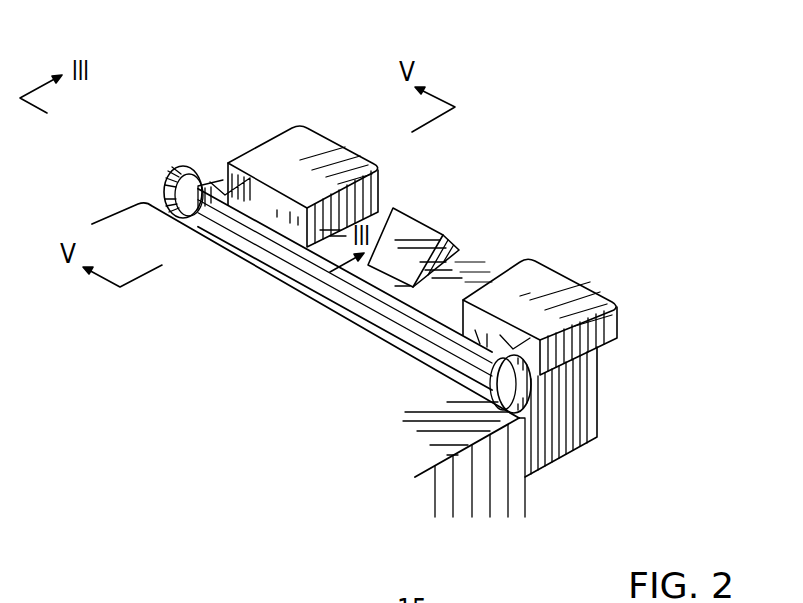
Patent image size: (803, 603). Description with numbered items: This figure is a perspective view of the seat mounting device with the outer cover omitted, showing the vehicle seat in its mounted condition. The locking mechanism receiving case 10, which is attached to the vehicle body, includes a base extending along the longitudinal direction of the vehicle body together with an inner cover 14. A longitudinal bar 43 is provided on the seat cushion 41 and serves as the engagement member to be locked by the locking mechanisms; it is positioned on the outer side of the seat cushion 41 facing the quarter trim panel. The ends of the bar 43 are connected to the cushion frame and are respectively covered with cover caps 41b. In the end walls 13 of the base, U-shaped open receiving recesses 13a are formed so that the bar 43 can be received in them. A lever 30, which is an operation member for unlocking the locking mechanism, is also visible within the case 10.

The locking mechanism receiving case 10 is at (352, 109).
The end wall 13 is at (577, 387).
The receiving recess 13a is at (217, 171).
The inner cover 14 is at (477, 270).
The lever 30 is at (412, 227).
The seat cushion 41 is at (272, 348).
The cover cap 41b is at (166, 194).
The bar 43 is at (398, 322).